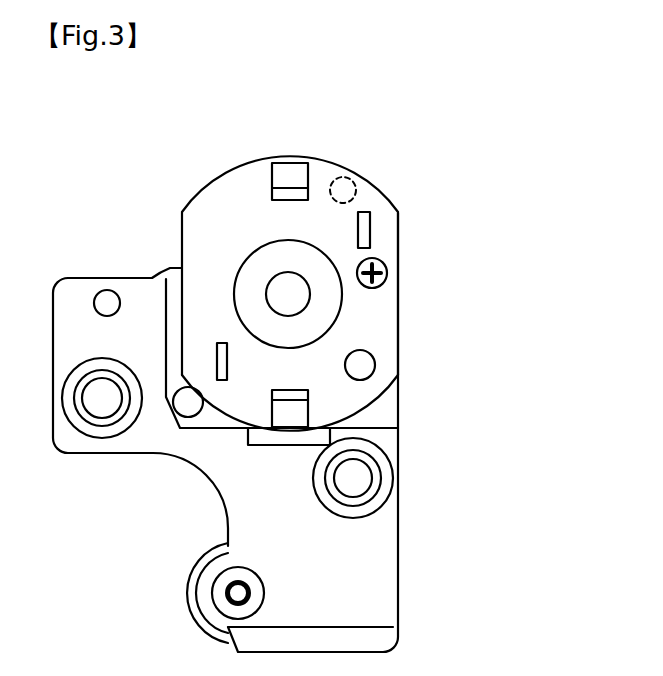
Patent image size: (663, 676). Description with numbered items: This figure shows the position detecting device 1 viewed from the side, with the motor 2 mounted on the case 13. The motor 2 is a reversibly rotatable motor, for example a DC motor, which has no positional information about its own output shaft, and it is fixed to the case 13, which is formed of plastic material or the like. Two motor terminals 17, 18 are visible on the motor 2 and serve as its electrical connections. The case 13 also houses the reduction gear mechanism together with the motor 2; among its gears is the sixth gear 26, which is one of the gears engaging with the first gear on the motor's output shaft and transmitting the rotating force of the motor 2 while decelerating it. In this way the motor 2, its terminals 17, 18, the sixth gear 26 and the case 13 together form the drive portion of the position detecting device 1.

The position detecting device 1 is at (438, 217).
The motor 2 is at (378, 330).
The case 13 is at (373, 580).
The motor terminal 17 is at (222, 342).
The motor terminal 18 is at (364, 211).
The sixth gear 26 is at (187, 600).